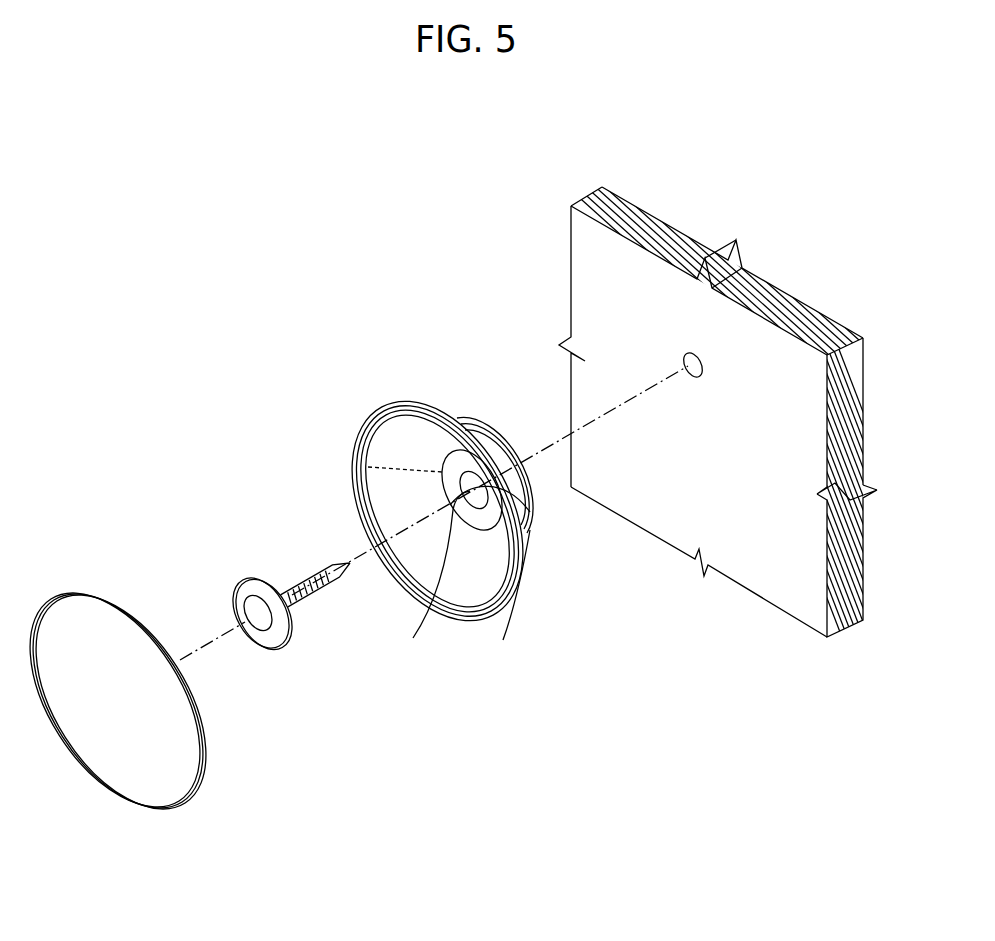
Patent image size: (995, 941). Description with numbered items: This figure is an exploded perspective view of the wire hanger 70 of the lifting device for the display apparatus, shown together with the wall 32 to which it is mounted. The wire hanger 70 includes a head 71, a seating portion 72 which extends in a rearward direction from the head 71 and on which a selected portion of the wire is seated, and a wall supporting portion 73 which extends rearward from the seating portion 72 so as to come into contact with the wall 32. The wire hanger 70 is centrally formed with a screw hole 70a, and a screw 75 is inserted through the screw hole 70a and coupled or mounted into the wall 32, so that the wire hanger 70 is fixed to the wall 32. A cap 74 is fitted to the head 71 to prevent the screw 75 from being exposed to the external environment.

The wire hanger 70 is at (219, 378).
The screw hole 70a is at (466, 530).
The head 71 is at (513, 612).
The seating portion 72 is at (531, 495).
The wall supporting portion 73 is at (517, 490).
The cap 74 is at (157, 793).
The screw 75 is at (243, 590).
The wall 32 is at (783, 580).